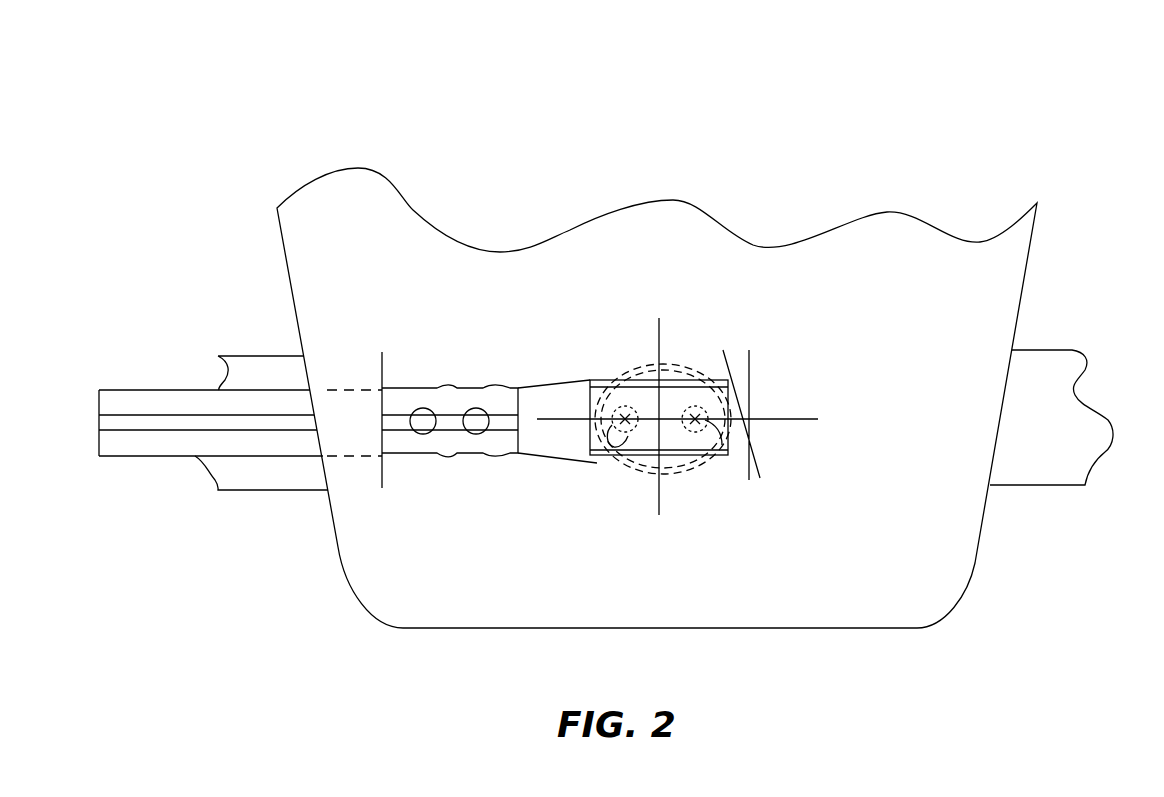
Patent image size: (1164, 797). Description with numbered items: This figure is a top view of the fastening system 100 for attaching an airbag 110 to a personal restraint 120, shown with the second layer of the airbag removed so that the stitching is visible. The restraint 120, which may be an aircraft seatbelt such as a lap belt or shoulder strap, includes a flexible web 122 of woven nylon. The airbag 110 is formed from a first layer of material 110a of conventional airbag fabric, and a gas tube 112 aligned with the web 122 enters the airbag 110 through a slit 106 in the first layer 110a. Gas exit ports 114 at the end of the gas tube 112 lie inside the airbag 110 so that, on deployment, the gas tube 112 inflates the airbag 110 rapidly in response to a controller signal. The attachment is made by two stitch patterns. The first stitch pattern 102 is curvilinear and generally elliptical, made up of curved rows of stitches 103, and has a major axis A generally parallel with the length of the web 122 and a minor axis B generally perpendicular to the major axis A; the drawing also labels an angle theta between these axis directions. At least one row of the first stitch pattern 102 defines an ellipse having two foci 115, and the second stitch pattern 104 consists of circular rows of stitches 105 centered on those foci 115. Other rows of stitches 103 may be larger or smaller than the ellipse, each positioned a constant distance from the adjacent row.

The fastening system 100 is at (178, 137).
The first stitch pattern 102 is at (727, 456).
The rows of stitches 103 is at (683, 365).
The second stitch pattern 104 is at (690, 412).
The circular rows of stitches 105 is at (620, 428).
The slit 106 is at (382, 373).
The airbag 110 is at (687, 612).
The first layer of material 110a is at (353, 542).
The gas tube 112 is at (137, 447).
The gas exit ports 114 is at (500, 456).
The foci 115 is at (620, 407).
The personal restraint 120 is at (1070, 340).
The flexible web 122 is at (257, 360).
The major axis A is at (803, 418).
The minor axis B is at (658, 335).
The angle theta is at (749, 380).